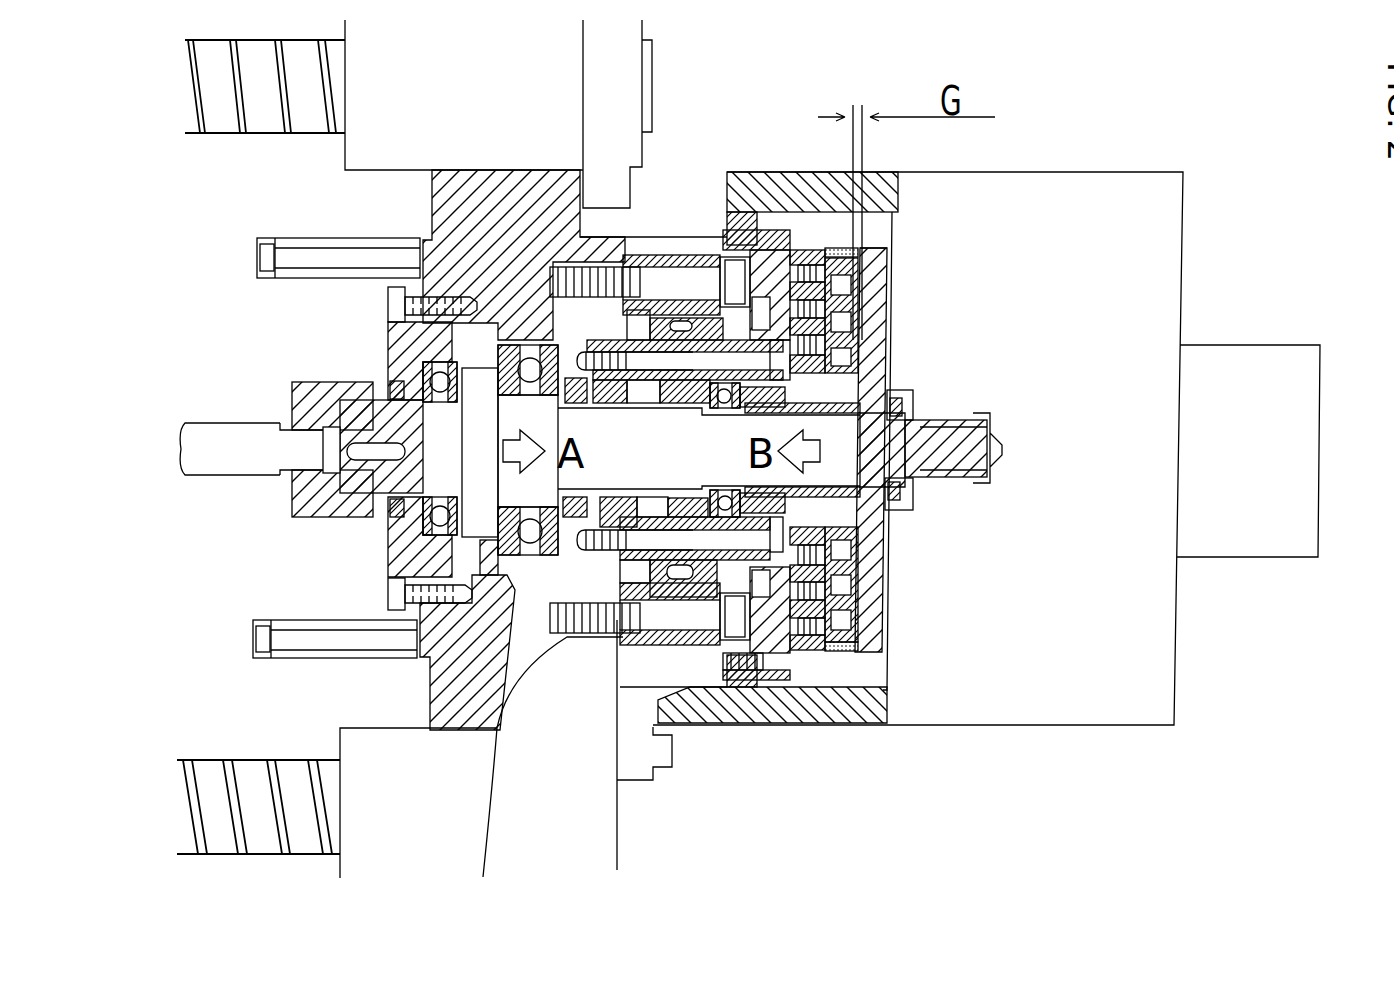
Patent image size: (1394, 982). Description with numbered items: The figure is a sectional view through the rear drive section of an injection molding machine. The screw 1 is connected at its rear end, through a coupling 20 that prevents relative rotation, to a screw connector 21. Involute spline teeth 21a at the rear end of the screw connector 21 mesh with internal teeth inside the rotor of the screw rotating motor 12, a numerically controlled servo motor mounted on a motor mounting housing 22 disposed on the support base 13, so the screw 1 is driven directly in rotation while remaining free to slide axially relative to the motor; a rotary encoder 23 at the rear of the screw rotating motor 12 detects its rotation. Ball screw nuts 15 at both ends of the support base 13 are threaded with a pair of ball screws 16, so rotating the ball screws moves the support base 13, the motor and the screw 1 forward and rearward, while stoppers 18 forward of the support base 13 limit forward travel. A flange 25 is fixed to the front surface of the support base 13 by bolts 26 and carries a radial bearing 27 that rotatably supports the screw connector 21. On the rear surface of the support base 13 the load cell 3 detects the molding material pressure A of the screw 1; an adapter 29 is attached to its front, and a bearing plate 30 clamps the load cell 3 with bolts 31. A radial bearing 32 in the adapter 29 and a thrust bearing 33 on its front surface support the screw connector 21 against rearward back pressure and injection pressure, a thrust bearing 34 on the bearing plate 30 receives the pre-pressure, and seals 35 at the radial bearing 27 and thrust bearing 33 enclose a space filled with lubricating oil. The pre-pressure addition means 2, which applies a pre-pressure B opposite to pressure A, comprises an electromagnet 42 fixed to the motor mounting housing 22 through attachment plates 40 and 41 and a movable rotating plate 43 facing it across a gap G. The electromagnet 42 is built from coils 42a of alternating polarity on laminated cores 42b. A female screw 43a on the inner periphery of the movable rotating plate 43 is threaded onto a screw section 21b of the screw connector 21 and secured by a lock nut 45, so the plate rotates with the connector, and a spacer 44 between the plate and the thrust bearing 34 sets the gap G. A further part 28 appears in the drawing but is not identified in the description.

The screw 1 is at (229, 467).
The pre-pressure addition means 2 is at (862, 715).
The load cell 3 is at (655, 293).
The screw rotating motor 12 is at (998, 703).
The support base 13 is at (430, 675).
The ball screw nuts 15 is at (373, 158).
The ball screws 16 is at (218, 127).
The stoppers 18 is at (288, 260).
The coupling 20 is at (292, 407).
The screw connector 21 is at (685, 467).
The involute spline teeth 21a is at (970, 410).
The screw section 21b is at (888, 375).
The motor mounting housing 22 is at (812, 717).
The rotary encoder 23 is at (1262, 545).
The flange 25 is at (387, 545).
The bolts 26 is at (388, 303).
The radial bearing 27 is at (423, 363).
The gear 28 is at (652, 287).
The adapter 29 is at (545, 300).
The bearing plate 30 is at (703, 297).
The bolts 31 is at (593, 310).
The radial bearing 32 is at (553, 540).
The thrust bearing 33 is at (490, 342).
The thrust bearing 34 is at (730, 517).
The seals 35 is at (390, 388).
The attachment plate 40 is at (765, 340).
The attachment plate 41 is at (793, 233).
The electromagnet 42 is at (841, 228).
The coils 42a is at (875, 262).
The cores 42b is at (887, 287).
The movable rotating plate 43 is at (878, 268).
The female screw 43a is at (937, 480).
The spacer 44 is at (892, 510).
The lock nut 45 is at (895, 513).